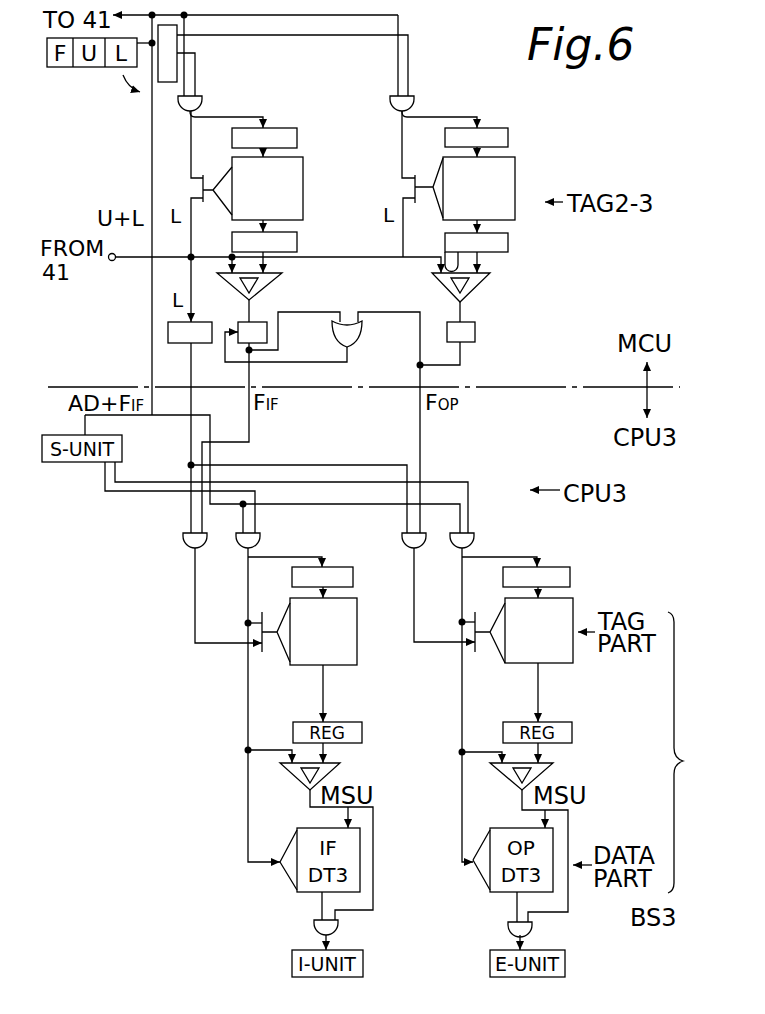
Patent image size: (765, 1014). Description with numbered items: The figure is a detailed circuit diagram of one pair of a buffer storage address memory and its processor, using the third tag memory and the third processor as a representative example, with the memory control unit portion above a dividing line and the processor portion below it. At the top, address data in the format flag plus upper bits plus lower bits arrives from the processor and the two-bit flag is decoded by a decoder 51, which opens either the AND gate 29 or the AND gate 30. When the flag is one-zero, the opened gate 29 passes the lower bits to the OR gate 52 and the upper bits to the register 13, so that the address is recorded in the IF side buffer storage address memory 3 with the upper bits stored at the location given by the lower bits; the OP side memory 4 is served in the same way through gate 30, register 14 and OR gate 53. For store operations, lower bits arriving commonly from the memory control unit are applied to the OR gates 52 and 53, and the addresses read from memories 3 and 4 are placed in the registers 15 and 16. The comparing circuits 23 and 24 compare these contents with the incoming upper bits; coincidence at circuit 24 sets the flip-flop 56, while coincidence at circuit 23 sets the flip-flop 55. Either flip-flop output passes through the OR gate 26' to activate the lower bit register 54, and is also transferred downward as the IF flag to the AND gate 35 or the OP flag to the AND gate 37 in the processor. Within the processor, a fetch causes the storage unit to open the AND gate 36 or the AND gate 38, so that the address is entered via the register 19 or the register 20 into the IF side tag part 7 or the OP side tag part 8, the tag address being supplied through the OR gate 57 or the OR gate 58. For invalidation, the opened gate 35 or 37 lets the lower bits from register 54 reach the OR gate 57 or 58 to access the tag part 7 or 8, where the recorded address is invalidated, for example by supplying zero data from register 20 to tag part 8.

The buffer storage address memory 3 is at (301, 158).
The OP side memory 4 is at (516, 162).
The tag part 7 is at (358, 612).
The tag part 8 is at (520, 665).
The register 13 is at (290, 127).
The register 14 is at (510, 128).
The register 15 is at (298, 235).
The register 16 is at (509, 238).
The register 19 is at (354, 577).
The register 20 is at (560, 567).
The comparing circuit 23 is at (283, 282).
The comparing circuit 24 is at (492, 277).
The OR gate 26' is at (373, 337).
The AND gate 29 is at (201, 97).
The AND gate 30 is at (414, 97).
The AND gate 35 is at (182, 540).
The AND gate 36 is at (260, 540).
The AND gate 37 is at (401, 538).
The AND gate 38 is at (474, 540).
The decoder 51 is at (167, 83).
The OR gate 52 is at (205, 173).
The OR gate 53 is at (420, 175).
The lower bit register 54 is at (207, 322).
The flip-flop 55 is at (267, 320).
The flip-flop 56 is at (476, 333).
The OR gate 57 is at (263, 623).
The OR gate 58 is at (477, 650).